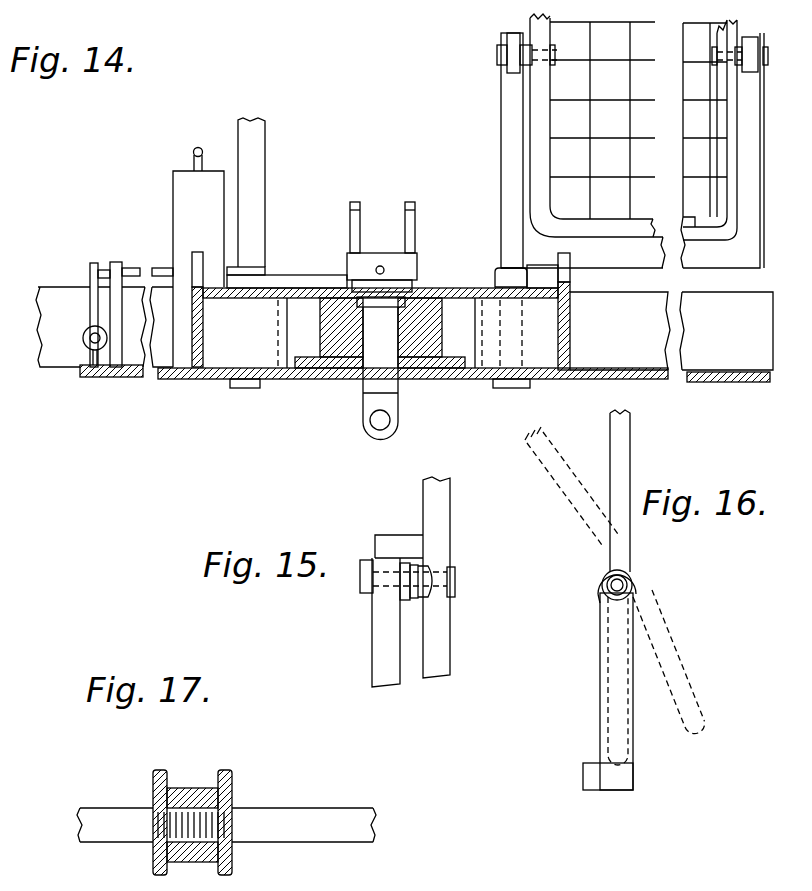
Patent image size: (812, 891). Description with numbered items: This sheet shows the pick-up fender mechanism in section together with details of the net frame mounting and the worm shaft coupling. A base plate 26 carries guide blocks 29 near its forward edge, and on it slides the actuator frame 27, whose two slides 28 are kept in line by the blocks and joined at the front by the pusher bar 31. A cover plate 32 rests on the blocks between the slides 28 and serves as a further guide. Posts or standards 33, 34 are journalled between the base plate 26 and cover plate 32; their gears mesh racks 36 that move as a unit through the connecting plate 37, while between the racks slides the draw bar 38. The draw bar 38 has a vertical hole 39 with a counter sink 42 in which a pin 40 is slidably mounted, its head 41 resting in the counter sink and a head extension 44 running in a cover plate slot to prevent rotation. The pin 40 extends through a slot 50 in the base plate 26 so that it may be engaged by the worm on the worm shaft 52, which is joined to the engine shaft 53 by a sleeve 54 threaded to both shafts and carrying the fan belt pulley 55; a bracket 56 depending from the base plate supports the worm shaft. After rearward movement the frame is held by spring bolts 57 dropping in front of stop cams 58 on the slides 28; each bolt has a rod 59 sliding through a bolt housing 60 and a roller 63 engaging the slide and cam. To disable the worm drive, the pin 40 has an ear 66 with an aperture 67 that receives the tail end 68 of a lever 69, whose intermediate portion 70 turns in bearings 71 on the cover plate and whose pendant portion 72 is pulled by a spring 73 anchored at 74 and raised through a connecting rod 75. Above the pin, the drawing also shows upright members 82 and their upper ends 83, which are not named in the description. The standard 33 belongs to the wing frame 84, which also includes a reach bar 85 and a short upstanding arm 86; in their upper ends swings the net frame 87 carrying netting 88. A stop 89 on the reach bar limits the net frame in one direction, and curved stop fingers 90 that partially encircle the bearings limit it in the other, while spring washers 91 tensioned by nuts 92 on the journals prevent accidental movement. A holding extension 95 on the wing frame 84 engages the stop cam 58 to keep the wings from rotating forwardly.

In FIG. 14, the base plate 26 is at (110, 379).
In FIG. 14, the actuator frame 27 is at (206, 358).
In FIG. 14, the slides 28 is at (180, 380).
In FIG. 14, the guide blocks 29 is at (270, 356).
In FIG. 14, the pusher bar 31 is at (72, 286).
In FIG. 14, the cover plate 32 is at (470, 289).
In FIG. 14, the standard 33 is at (505, 151).
In FIG. 15, the standard 33 is at (372, 672).
In FIG. 16, the standard 33 is at (605, 703).
In FIG. 14, the standard 34 is at (265, 146).
In FIG. 14, the rack 36 is at (303, 342).
In FIG. 14, the connecting plate 37 is at (452, 372).
In FIG. 14, the draw bar 38 is at (441, 371).
In FIG. 14, the vertical hole 39 is at (355, 363).
In FIG. 14, the pin 40 is at (360, 394).
In FIG. 14, the head 41 is at (415, 291).
In FIG. 14, the counter sink 42 is at (405, 309).
In FIG. 14, the head extension 44 is at (400, 283).
In FIG. 14, the slot 50 is at (356, 378).
In FIG. 14, the worm shaft 52 is at (379, 429).
In FIG. 17, the worm shaft 52 is at (107, 843).
In FIG. 17, the engine shaft 53 is at (311, 843).
In FIG. 17, the sleeve 54 is at (233, 806).
In FIG. 17, the fan belt pulley 55 is at (154, 780).
In FIG. 14, the bracket 56 is at (365, 401).
In FIG. 14, the spring bolt 57 is at (198, 254).
In FIG. 14, the stop cam 58 is at (196, 286).
In FIG. 14, the rod 59 is at (193, 153).
In FIG. 14, the bolt housing 60 is at (178, 195).
In FIG. 14, the roller 63 is at (196, 272).
In FIG. 14, the ear 66 is at (410, 258).
In FIG. 14, the aperture 67 is at (381, 266).
In FIG. 14, the tail end 68 is at (385, 271).
In FIG. 14, the lever 69 is at (99, 254).
In FIG. 14, the intermediate portion 70 is at (290, 275).
In FIG. 14, the bearings 71 is at (116, 298).
In FIG. 14, the pendant portion 72 is at (88, 324).
In FIG. 14, the spring 73 is at (92, 342).
In FIG. 14, the anchor 74 is at (75, 378).
In FIG. 14, the connecting rod 75 is at (99, 350).
In FIG. 14, the rod 82 is at (350, 229).
In FIG. 14, the rod ends 83 is at (410, 203).
In FIG. 14, the wing frame 84 is at (621, 148).
In FIG. 14, the reach bar 85 is at (630, 260).
In FIG. 14, the short upstanding arm 86 is at (763, 159).
In FIG. 14, the net frame 87 is at (535, 120).
In FIG. 15, the net frame 87 is at (449, 528).
In FIG. 16, the net frame 87 is at (640, 537).
In FIG. 14, the netting 88 is at (560, 160).
In FIG. 14, the stop 89 is at (707, 258).
In FIG. 14, the stop fingers 90 is at (510, 70).
In FIG. 15, the stop fingers 90 is at (375, 545).
In FIG. 16, the stop fingers 90 is at (592, 582).
In FIG. 14, the spring washers 91 is at (528, 45).
In FIG. 15, the spring washers 91 is at (409, 599).
In FIG. 14, the nuts 92 is at (497, 50).
In FIG. 15, the nuts 92 is at (361, 590).
In FIG. 16, the nuts 92 is at (634, 583).
In FIG. 14, the holding extension 95 is at (546, 270).